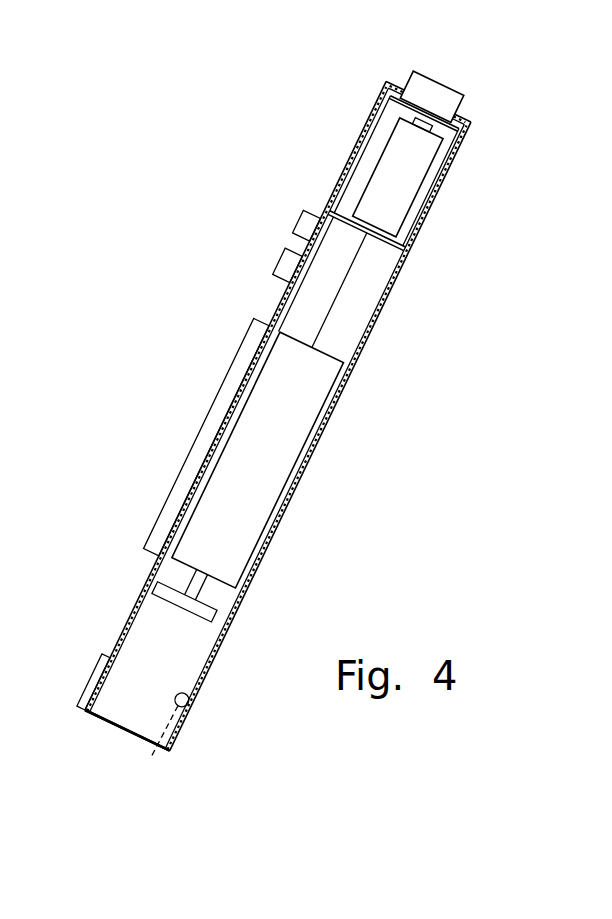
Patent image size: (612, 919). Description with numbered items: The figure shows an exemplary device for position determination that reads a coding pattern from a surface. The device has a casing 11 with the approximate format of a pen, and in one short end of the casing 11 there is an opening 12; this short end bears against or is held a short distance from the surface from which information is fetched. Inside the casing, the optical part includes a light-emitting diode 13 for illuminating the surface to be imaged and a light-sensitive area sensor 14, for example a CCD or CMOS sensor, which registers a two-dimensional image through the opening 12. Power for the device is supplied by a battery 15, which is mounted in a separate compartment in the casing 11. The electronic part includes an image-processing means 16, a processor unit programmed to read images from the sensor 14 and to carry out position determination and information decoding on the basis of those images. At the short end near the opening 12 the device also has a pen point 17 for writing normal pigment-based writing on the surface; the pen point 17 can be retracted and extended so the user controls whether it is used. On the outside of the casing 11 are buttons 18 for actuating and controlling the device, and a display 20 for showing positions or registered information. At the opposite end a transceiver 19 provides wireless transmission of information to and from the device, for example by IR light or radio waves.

The casing 11 is at (350, 384).
The opening 12 is at (117, 734).
The light-emitting diode 13 is at (188, 700).
The light-sensitive area sensor 14 is at (218, 601).
The battery 15 is at (397, 185).
The image-processing means 16 is at (256, 494).
The pen point 17 is at (94, 673).
The buttons 18 is at (296, 231).
The transceiver 19 is at (437, 88).
The display 20 is at (211, 428).